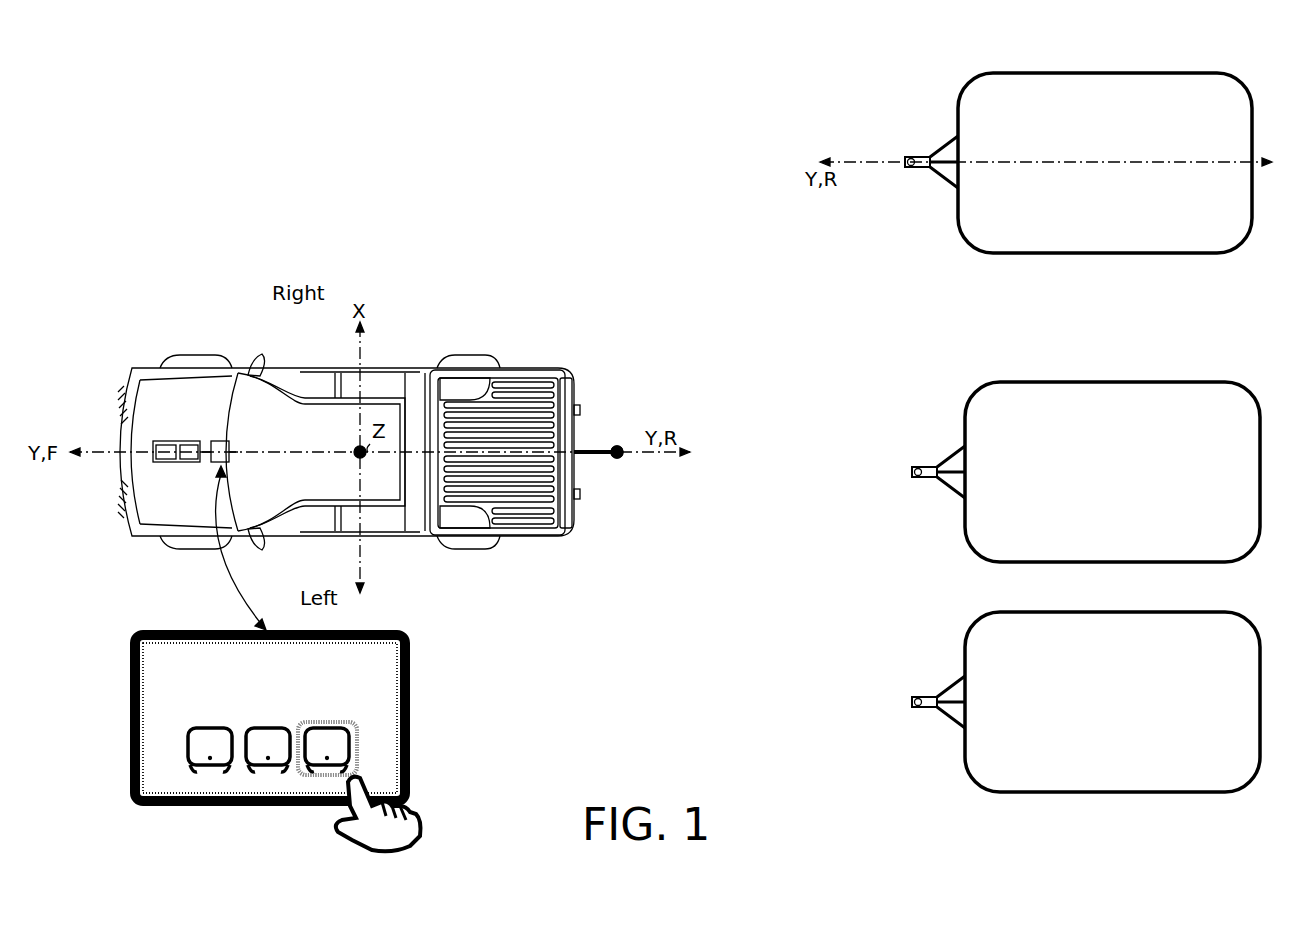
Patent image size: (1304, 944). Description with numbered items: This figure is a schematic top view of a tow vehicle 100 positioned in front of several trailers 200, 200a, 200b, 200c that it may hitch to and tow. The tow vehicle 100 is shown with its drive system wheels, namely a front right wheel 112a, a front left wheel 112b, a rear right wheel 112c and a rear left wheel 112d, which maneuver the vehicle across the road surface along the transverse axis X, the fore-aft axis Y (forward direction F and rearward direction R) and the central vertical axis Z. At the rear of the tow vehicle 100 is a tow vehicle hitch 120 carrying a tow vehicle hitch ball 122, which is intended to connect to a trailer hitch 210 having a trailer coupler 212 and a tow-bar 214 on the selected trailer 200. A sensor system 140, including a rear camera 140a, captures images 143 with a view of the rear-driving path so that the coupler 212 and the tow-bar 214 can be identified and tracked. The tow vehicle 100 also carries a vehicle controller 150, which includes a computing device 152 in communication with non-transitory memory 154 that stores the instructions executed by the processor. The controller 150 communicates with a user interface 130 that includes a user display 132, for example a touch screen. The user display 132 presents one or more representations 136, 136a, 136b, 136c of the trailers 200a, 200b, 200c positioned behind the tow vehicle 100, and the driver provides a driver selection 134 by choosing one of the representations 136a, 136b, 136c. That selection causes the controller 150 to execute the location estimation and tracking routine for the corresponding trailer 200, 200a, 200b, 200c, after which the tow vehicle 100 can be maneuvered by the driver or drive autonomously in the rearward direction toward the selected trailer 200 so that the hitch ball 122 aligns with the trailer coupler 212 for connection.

The tow vehicle 100 is at (126, 353).
The front right wheel 112a is at (186, 356).
The front left wheel 112b is at (186, 552).
The rear right wheel 112c is at (472, 356).
The rear left wheel 112d is at (484, 552).
The tow vehicle hitch 120 is at (599, 456).
The tow vehicle hitch ball 122 is at (622, 456).
The user interface 130 is at (314, 607).
The user display 132 is at (400, 715).
The driver selection 134 is at (346, 718).
The representation of trailer 136 is at (270, 722).
The representation of trailer 136a is at (324, 726).
The representation of trailer 136b is at (268, 726).
The representation of trailer 136c is at (210, 726).
The sensor system 140 is at (471, 455).
The rear camera 140a is at (578, 458).
The image 143 is at (160, 667).
The vehicle controller 150 is at (169, 466).
The computing device 152 is at (166, 460).
The non-transitory memory 154 is at (190, 462).
The trailer 200 is at (1109, 432).
The trailer 200a is at (1155, 146).
The trailer 200b is at (1163, 482).
The trailer 200c is at (1163, 712).
The trailer hitch 210 is at (898, 405).
The trailer coupler 212 is at (894, 416).
The tow-bar 214 is at (934, 148).